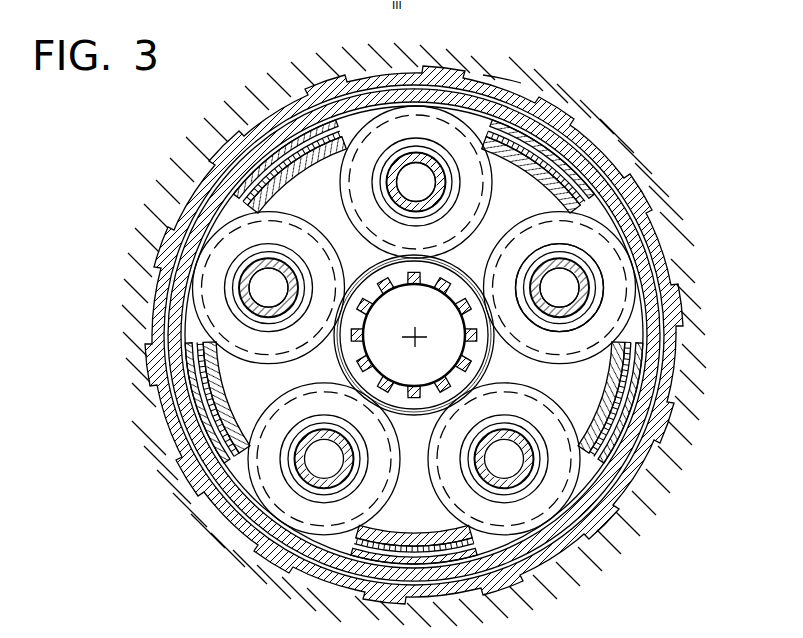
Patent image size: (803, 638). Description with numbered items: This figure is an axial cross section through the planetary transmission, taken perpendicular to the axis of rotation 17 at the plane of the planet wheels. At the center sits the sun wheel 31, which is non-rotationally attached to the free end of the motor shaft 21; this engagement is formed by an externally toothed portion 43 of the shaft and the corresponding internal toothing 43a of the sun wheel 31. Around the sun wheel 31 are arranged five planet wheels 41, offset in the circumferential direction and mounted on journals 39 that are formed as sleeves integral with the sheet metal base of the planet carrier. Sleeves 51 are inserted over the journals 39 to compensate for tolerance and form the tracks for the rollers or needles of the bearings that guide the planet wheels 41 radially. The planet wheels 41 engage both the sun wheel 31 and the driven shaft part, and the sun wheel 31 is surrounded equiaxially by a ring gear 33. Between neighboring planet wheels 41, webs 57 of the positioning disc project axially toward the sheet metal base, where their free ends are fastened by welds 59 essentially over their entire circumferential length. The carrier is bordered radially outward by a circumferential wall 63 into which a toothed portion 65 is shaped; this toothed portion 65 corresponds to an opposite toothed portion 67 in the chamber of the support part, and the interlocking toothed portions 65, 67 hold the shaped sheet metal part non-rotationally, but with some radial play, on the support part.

The axis of rotation 17 is at (416, 332).
The motor shaft 21 is at (353, 344).
The sun wheel 31 is at (416, 409).
The ring gear 33 is at (648, 218).
The journals 39 is at (401, 165).
The planet wheels 41 is at (438, 128).
The externally toothed portion 43 is at (492, 356).
The internal toothing 43a is at (434, 274).
The sleeves 51 is at (594, 271).
The webs 57 is at (230, 233).
The welds 59 is at (262, 118).
The circumferential wall 63 is at (624, 221).
The toothed portion 65 is at (520, 92).
The opposite toothed portion 67 is at (522, 80).